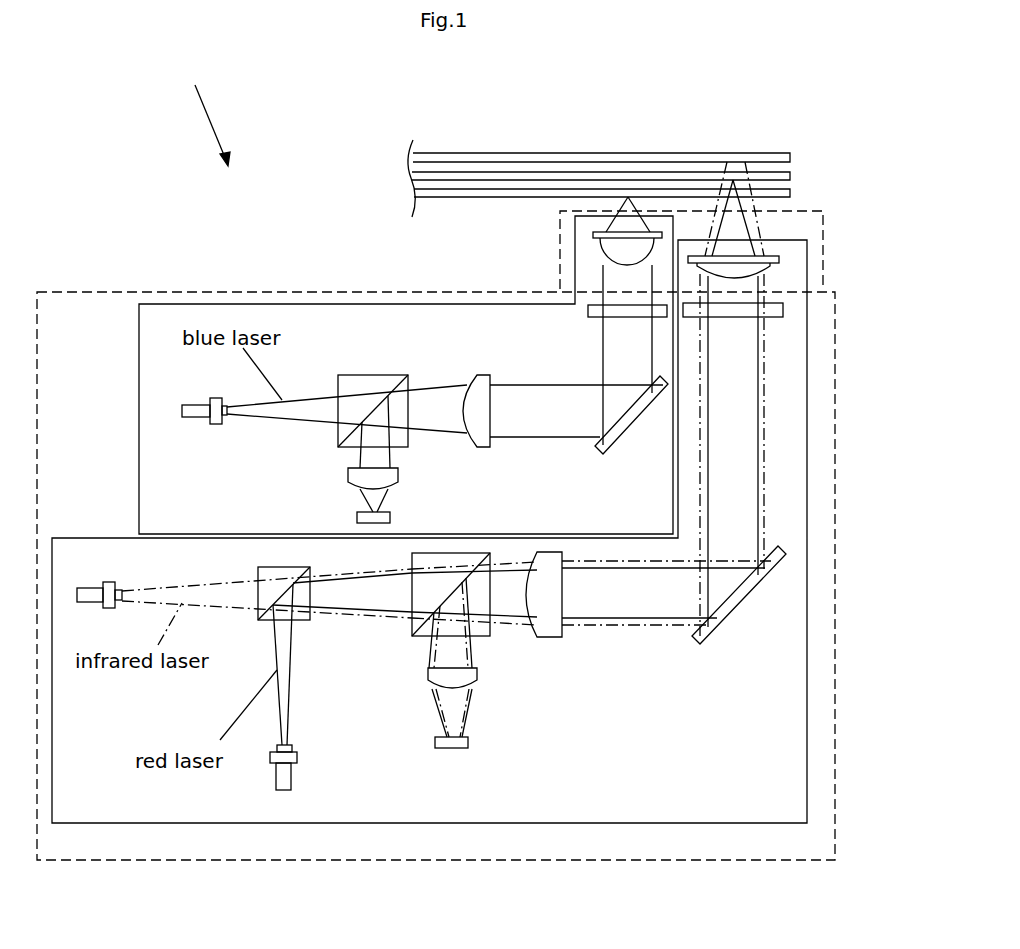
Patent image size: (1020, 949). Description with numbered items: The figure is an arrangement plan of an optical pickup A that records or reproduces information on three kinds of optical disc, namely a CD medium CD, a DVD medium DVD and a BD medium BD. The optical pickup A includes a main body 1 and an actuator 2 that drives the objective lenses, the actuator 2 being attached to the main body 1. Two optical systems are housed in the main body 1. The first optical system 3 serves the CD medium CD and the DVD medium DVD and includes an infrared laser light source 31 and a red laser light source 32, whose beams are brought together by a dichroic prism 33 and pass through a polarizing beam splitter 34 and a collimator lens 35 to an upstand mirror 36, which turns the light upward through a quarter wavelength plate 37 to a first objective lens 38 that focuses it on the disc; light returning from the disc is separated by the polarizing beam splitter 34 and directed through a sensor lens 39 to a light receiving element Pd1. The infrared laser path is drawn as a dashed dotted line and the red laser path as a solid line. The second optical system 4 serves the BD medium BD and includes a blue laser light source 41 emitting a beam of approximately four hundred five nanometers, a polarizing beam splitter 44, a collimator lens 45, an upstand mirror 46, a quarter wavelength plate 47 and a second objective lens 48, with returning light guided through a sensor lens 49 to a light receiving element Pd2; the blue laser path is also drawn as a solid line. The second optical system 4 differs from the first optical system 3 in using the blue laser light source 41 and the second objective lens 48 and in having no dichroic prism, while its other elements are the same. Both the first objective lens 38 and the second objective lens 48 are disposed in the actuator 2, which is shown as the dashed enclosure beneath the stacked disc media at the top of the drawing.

The main body 1 is at (90, 290).
The actuator 2 is at (825, 230).
The first optical system 3 is at (217, 823).
The second optical system 4 is at (139, 405).
The infrared laser light source 31 is at (93, 593).
The red laser light source 32 is at (283, 775).
The dichroic prism 33 is at (307, 622).
The polarizing beam splitter 34 is at (485, 630).
The collimator lens 35 is at (550, 627).
The upstand mirror 36 is at (722, 613).
The quarter wavelength plate 37 is at (770, 312).
The first objective lens 38 is at (763, 260).
The sensor lens 39 is at (477, 677).
The blue laser light source 41 is at (202, 412).
The polarizing beam splitter 44 is at (360, 382).
The collimator lens 45 is at (473, 393).
The upstand mirror 46 is at (617, 437).
The quarter wavelength plate 47 is at (598, 315).
The second objective lens 48 is at (603, 243).
The sensor lens 49 is at (383, 477).
The light receiving element Pd1 is at (455, 743).
The light receiving element Pd2 is at (362, 515).
The optical pickup A is at (206, 112).
The CD medium CD is at (567, 157).
The DVD medium DVD is at (468, 175).
The BD medium BD is at (463, 197).